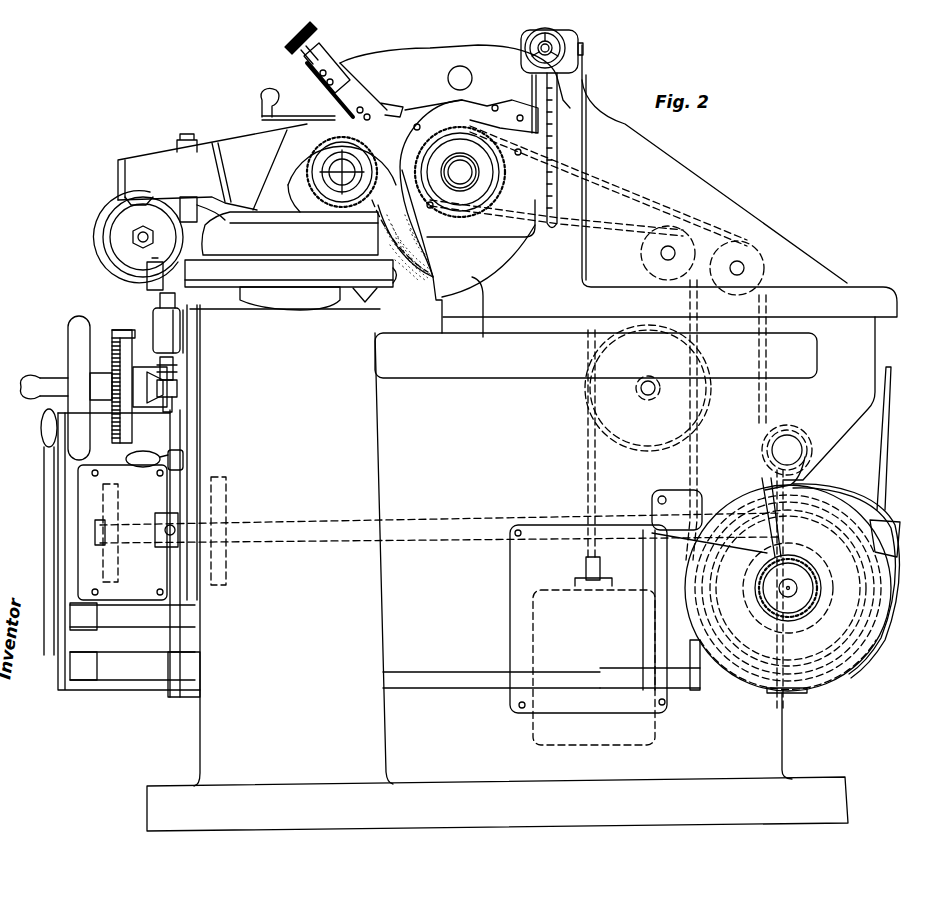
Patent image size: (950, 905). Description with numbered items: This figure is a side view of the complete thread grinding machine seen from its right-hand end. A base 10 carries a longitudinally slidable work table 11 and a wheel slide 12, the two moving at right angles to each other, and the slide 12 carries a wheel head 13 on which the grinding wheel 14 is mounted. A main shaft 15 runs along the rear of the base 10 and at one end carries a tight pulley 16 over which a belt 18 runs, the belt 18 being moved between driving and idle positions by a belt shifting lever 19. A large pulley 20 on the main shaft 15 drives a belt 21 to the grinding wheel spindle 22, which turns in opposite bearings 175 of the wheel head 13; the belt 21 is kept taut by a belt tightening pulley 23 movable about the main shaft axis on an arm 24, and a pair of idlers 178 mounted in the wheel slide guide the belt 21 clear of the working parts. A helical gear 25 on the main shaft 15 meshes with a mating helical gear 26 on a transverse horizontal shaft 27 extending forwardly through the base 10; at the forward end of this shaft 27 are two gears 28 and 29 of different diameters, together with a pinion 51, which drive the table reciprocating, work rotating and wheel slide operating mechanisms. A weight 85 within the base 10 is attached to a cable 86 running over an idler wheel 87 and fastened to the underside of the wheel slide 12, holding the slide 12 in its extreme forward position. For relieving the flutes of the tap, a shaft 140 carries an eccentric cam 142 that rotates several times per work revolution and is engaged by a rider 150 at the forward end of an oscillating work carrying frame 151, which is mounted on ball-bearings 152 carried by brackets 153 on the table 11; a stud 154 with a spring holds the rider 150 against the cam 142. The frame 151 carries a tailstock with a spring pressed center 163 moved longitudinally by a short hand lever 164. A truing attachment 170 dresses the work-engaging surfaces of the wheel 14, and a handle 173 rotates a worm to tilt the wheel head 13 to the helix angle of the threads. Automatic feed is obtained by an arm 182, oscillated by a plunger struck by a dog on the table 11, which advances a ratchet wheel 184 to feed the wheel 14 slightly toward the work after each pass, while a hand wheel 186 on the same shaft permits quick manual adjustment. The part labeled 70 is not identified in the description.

The base 10 is at (210, 733).
The table 11 is at (162, 290).
The slide 12 is at (849, 288).
The head 13 is at (483, 337).
The grinding wheel 14 is at (416, 284).
The main shaft 15 is at (850, 626).
The tight pulley 16 is at (837, 662).
The belt 18 is at (888, 455).
The belt shifting lever 19 is at (150, 455).
The large pulley 20 is at (753, 689).
The belt 21 is at (780, 292).
The grinding wheel spindle 22 is at (470, 174).
The belt tightening pulley 23 is at (800, 433).
The arm 24 is at (808, 500).
The helical gear 25 is at (800, 577).
The mating helical gear 26 is at (790, 537).
The transverse horizontal shaft 27 is at (455, 536).
The gear 28 is at (226, 493).
The gear 29 is at (117, 498).
The pinion 51 is at (160, 543).
The shaft 70 is at (44, 486).
The weight 85 is at (533, 728).
The cable 86 is at (587, 452).
The idler wheel 87 is at (617, 434).
The shaft 140 is at (135, 238).
The eccentric cam 142 is at (128, 222).
The rider 150 is at (138, 200).
The oscillating work carrying frame 151 is at (161, 160).
The ball-bearings 152 is at (327, 206).
The brackets 153 is at (338, 127).
The stud 154 is at (226, 197).
The spring pressed center 163 is at (336, 168).
The short hand lever 164 is at (268, 100).
The truing attachment 170 is at (372, 66).
The handle 173 is at (584, 70).
The bearings 175 is at (453, 147).
The idlers 178 is at (727, 247).
The arm 182 is at (177, 389).
The ratchet wheel 184 is at (113, 343).
The hand wheel 186 is at (74, 327).